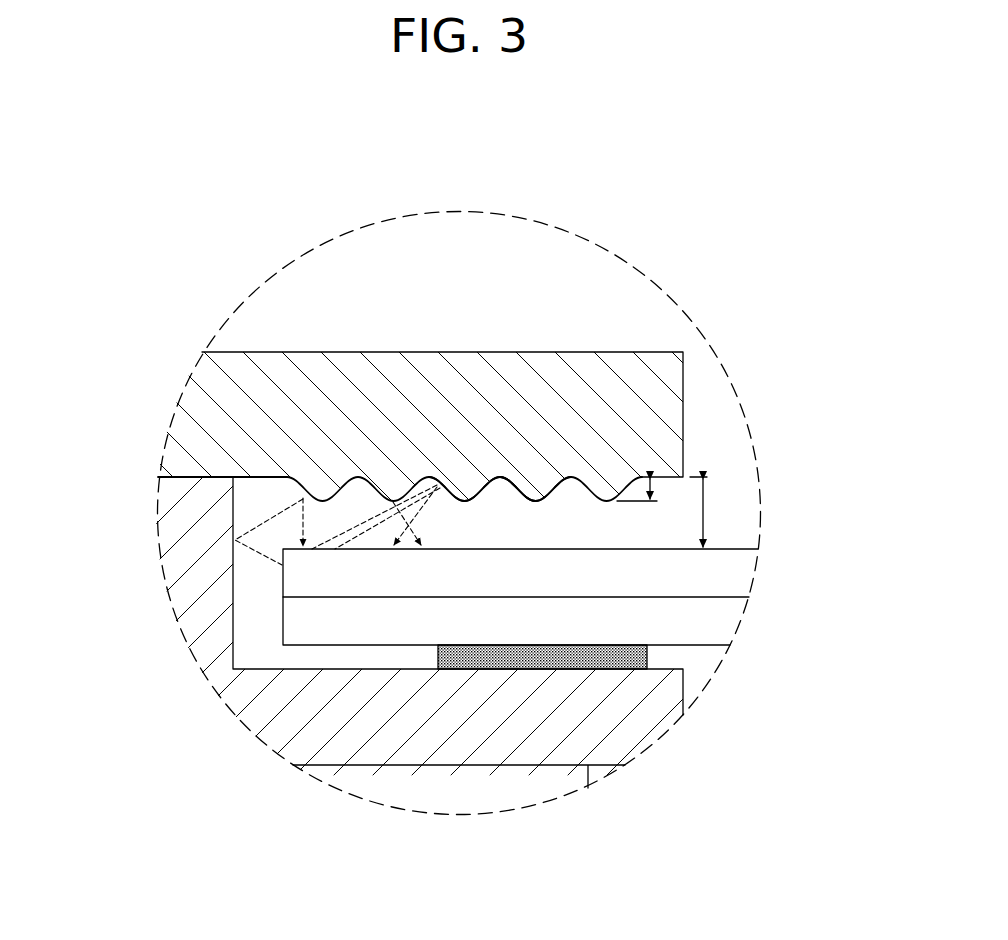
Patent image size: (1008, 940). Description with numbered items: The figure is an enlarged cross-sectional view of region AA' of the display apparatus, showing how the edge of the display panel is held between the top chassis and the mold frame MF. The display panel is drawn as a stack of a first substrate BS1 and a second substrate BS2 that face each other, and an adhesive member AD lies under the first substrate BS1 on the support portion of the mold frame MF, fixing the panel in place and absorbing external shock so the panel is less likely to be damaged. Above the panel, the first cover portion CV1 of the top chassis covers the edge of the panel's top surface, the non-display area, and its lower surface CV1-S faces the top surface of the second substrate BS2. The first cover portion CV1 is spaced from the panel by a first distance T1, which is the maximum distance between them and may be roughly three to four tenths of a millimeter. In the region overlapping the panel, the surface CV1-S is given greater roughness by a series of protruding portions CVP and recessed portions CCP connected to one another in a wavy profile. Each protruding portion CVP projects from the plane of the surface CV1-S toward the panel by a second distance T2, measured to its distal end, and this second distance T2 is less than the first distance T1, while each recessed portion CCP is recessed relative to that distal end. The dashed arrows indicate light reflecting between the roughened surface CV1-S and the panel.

The region AA' is at (459, 469).
The first cover portion CV1 is at (355, 372).
The recessed portion CCP is at (498, 483).
The protruding portion CVP is at (541, 503).
The surface CV1-S is at (263, 481).
The mold frame MF is at (289, 728).
The second substrate BS2 is at (742, 573).
The first substrate BS1 is at (730, 625).
The adhesive member AD is at (647, 657).
The first distance T1 is at (713, 512).
The second distance T2 is at (650, 490).